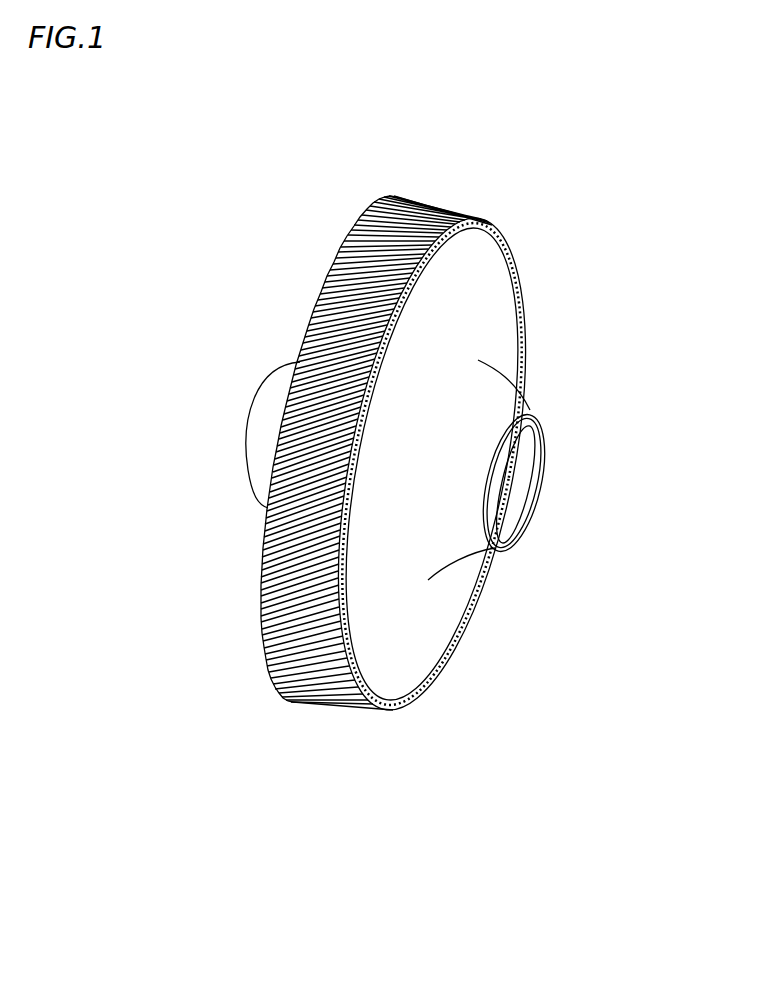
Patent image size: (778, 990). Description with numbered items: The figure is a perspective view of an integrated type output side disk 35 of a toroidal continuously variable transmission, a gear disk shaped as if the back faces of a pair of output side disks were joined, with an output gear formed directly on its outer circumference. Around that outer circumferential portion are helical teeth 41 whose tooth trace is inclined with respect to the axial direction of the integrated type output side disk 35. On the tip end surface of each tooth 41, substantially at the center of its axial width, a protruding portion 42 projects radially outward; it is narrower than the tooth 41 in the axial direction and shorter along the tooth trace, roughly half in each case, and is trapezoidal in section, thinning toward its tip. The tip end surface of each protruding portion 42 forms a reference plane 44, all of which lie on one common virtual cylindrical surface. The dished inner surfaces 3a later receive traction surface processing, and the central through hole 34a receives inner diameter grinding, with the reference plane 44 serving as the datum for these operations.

The inner surface 3a is at (503, 340).
The integrated type output side disk 35 is at (500, 277).
The through hole 34a is at (517, 487).
The tooth 41 is at (280, 687).
The protruding portion 42 is at (368, 216).
The reference plane 44 is at (432, 192).